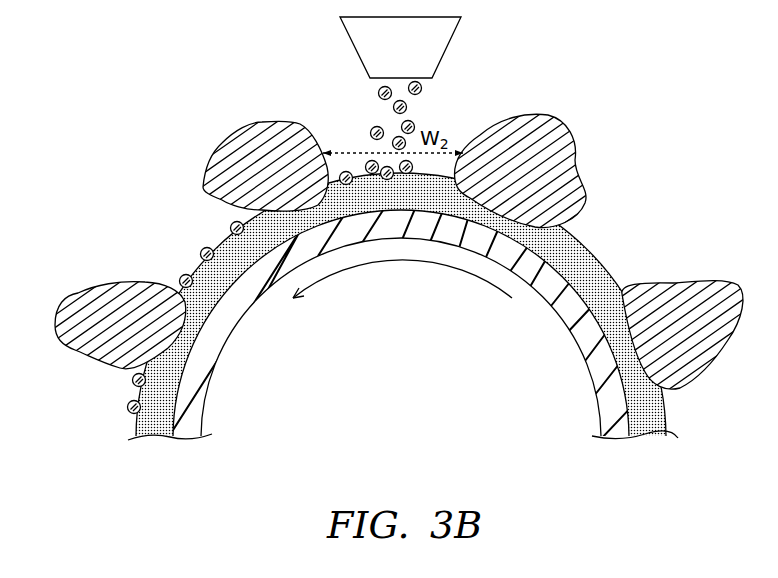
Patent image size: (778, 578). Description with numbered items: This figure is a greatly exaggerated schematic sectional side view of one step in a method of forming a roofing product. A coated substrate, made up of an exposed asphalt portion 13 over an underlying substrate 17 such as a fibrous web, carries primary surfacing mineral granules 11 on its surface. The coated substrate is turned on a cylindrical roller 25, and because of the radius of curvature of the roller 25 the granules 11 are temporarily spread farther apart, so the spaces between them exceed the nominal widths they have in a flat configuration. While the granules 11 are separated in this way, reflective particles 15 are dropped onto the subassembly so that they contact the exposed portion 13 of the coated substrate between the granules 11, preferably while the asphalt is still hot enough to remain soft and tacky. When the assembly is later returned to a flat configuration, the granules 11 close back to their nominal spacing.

The primary surfacing mineral granules 11 is at (558, 140).
The exposed portion 13 is at (528, 343).
The reflective particles 15 is at (378, 92).
The underlying substrate 17 is at (586, 325).
The cylindrical roller 25 is at (621, 289).